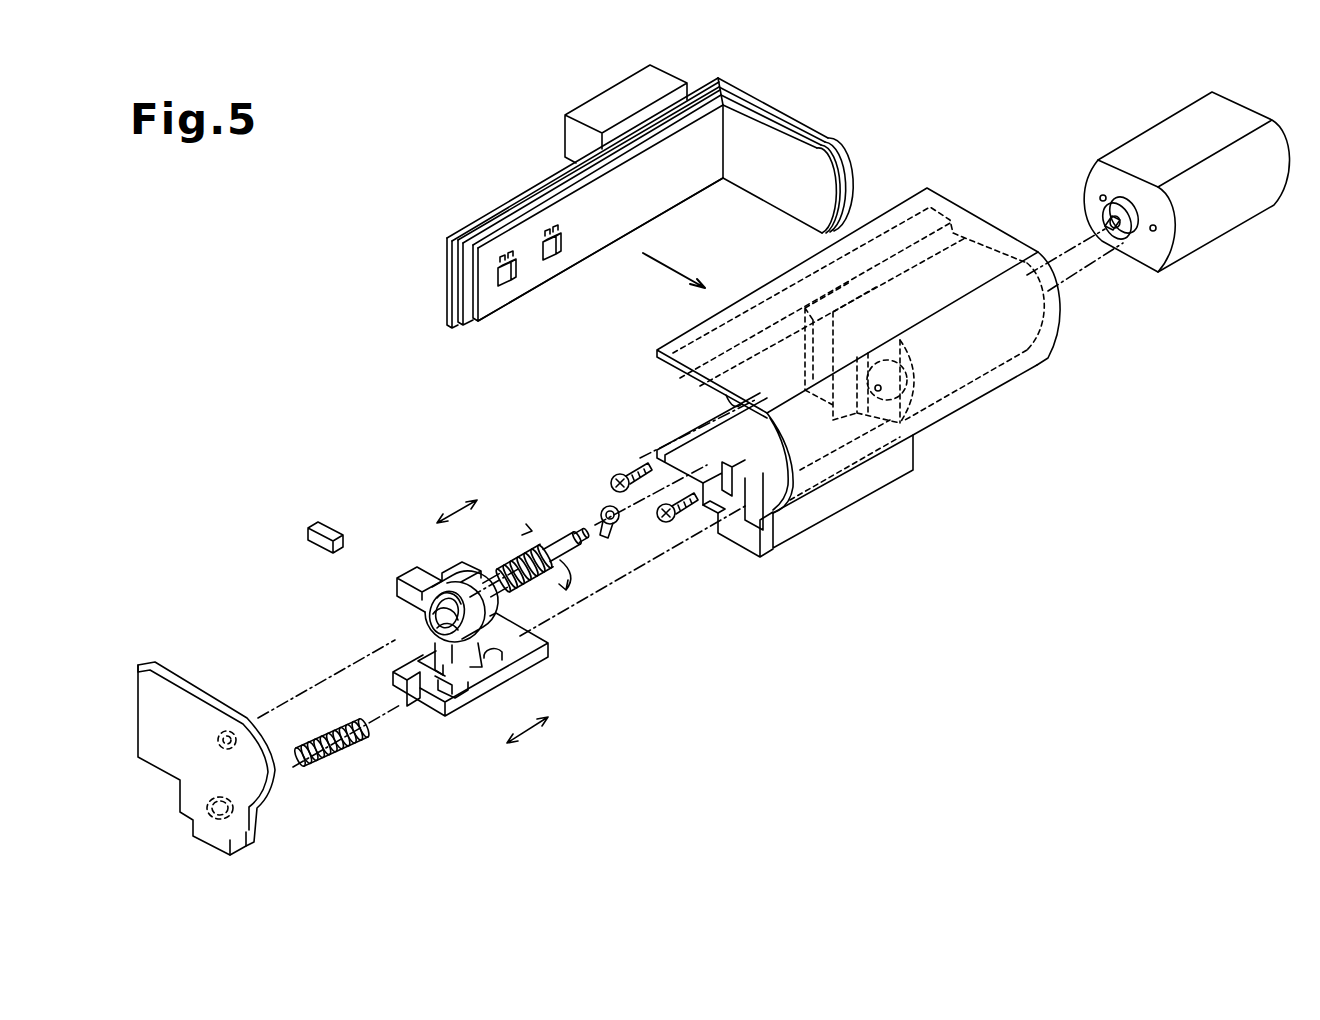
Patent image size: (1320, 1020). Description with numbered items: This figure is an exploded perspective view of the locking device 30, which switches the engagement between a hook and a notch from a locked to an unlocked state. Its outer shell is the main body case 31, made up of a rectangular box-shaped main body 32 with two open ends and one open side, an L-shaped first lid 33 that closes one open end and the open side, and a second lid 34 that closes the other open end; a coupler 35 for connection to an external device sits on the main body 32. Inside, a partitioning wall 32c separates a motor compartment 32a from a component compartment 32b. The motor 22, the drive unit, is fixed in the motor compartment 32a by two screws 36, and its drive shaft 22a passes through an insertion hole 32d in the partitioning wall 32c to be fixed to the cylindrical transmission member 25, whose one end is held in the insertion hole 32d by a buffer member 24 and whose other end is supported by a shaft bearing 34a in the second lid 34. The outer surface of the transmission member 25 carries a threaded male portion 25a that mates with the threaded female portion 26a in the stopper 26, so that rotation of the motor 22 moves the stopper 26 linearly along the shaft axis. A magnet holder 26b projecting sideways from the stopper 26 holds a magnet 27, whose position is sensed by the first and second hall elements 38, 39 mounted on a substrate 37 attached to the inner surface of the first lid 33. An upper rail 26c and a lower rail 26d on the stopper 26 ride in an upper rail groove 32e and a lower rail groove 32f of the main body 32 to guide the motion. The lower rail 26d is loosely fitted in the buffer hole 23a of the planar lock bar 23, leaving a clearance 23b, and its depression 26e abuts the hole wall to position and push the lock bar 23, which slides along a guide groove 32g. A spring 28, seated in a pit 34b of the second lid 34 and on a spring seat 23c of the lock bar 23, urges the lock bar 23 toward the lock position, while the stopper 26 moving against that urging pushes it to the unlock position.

The motor 22 is at (1172, 117).
The drive shaft 22a is at (1105, 225).
The lock bar 23 is at (458, 664).
The buffer hole 23a is at (503, 650).
The clearance 23b is at (425, 658).
The spring seat 23c is at (398, 692).
The buffer member 24 is at (600, 508).
The transmission member 25 is at (537, 544).
The threaded male portion 25a is at (520, 552).
The stopper 26 is at (439, 634).
The threaded female portion 26a is at (425, 618).
The magnet holder 26b is at (396, 586).
The upper rail 26c is at (458, 562).
The lower rail 26d is at (463, 692).
The depression 26e is at (460, 684).
The magnet 27 is at (340, 522).
The spring 28 is at (350, 760).
The locking device 30 is at (1039, 107).
The main body case 31 is at (879, 385).
The main body 32 is at (1015, 375).
The motor compartment 32a is at (1065, 316).
The component compartment 32b is at (912, 437).
The partitioning wall 32c is at (938, 418).
The insertion hole 32d is at (905, 366).
The upper rail groove 32e is at (730, 406).
The lower rail groove 32f is at (752, 538).
The guide groove 32g is at (700, 512).
The first lid 33 is at (785, 116).
The second lid 34 is at (206, 747).
The shaft bearing 34a is at (218, 738).
The pit 34b is at (222, 794).
The coupler 35 is at (605, 111).
The screws 36 is at (662, 502).
The substrate 37 is at (690, 204).
The first hall element 38 is at (512, 290).
The second hall element 39 is at (553, 258).